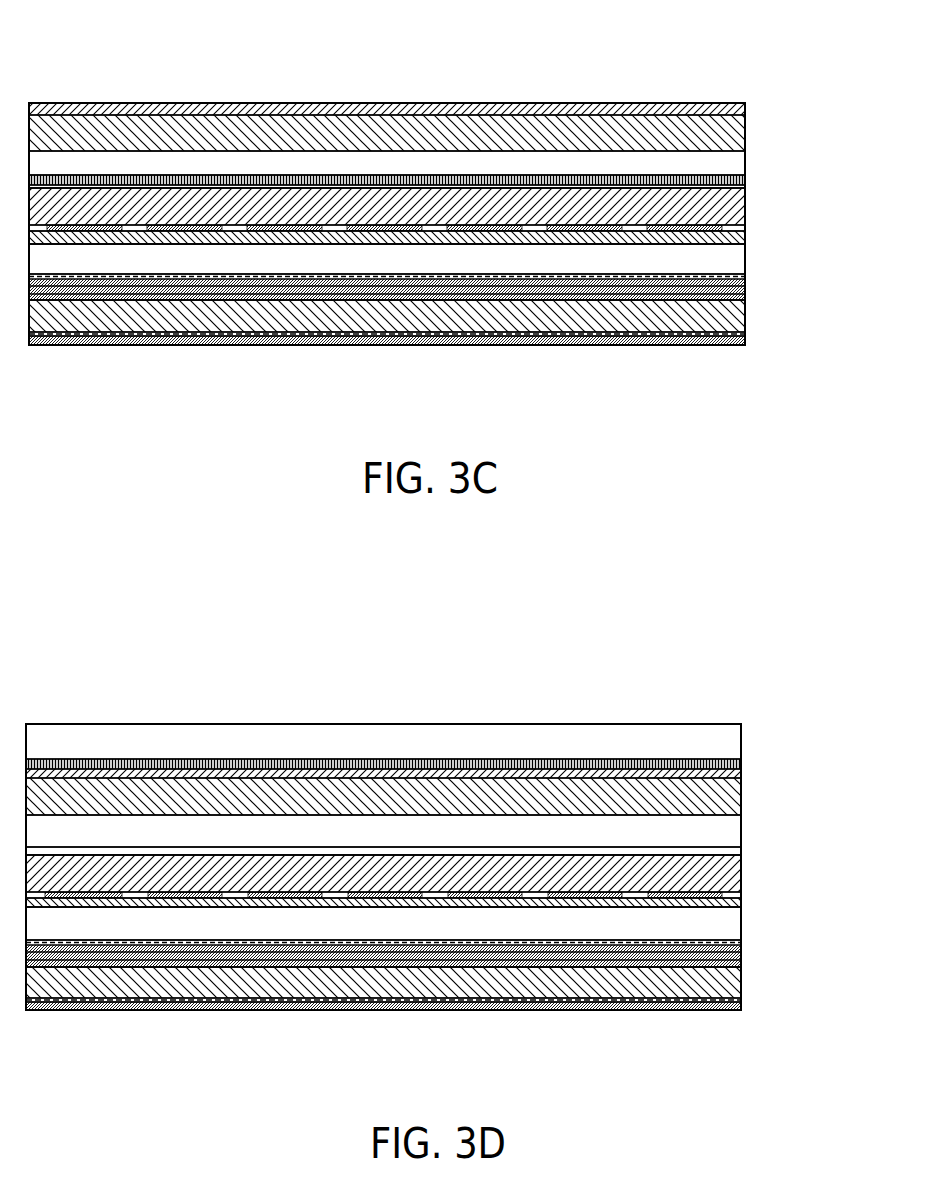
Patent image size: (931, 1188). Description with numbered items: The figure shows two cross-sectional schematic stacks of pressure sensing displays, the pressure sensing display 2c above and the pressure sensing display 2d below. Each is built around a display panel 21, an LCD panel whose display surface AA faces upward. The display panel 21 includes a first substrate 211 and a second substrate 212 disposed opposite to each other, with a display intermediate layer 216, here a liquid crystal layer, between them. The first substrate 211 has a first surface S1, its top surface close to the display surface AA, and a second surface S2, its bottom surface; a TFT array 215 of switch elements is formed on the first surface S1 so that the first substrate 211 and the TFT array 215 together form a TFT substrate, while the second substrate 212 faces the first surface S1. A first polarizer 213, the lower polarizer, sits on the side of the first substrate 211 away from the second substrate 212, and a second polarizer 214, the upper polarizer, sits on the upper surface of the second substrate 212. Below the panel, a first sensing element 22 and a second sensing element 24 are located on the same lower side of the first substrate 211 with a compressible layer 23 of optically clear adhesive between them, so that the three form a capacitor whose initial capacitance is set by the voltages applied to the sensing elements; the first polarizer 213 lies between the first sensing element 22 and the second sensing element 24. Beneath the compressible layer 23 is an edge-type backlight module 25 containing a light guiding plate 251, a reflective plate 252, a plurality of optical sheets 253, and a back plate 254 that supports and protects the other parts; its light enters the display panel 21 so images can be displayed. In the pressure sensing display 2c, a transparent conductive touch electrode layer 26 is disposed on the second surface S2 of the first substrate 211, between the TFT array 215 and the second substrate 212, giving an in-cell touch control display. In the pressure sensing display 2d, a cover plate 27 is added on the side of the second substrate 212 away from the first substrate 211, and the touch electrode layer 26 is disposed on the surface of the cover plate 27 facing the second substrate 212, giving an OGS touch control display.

In FIG. 3C, the pressure sensing display 2c is at (132, 52).
In FIG. 3D, the pressure sensing display 2d is at (132, 680).
In FIG. 3C, the display surface AA is at (570, 103).
In FIG. 3D, the display surface AA is at (597, 724).
In FIG. 3C, the first surface S1 is at (456, 190).
In FIG. 3D, the first surface S1 is at (482, 855).
In FIG. 3C, the second surface S2 is at (532, 232).
In FIG. 3D, the second surface S2 is at (528, 899).
In FIG. 3C, the display panel 21 is at (817, 88).
In FIG. 3D, the display panel 21 is at (815, 750).
In FIG. 3C, the first substrate 211 is at (734, 213).
In FIG. 3D, the first substrate 211 is at (733, 878).
In FIG. 3C, the second substrate 212 is at (736, 142).
In FIG. 3D, the second substrate 212 is at (733, 800).
In FIG. 3C, the first polarizer 213 is at (736, 238).
In FIG. 3D, the first polarizer 213 is at (733, 900).
In FIG. 3C, the second polarizer 214 is at (736, 112).
In FIG. 3D, the second polarizer 214 is at (733, 773).
In FIG. 3C, the TFT array 215 is at (736, 188).
In FIG. 3D, the TFT array 215 is at (733, 852).
In FIG. 3C, the display intermediate layer 216 is at (722, 166).
In FIG. 3D, the display intermediate layer 216 is at (720, 837).
In FIG. 3C, the first sensing element 22 is at (480, 230).
In FIG. 3D, the first sensing element 22 is at (476, 896).
In FIG. 3C, the compressible layer 23 is at (722, 260).
In FIG. 3D, the compressible layer 23 is at (720, 923).
In FIG. 3C, the second sensing element 24 is at (600, 300).
In FIG. 3D, the second sensing element 24 is at (597, 967).
In FIG. 3C, the backlight module 25 is at (817, 275).
In FIG. 3D, the backlight module 25 is at (813, 942).
In FIG. 3C, the light guiding plate 251 is at (740, 318).
In FIG. 3D, the light guiding plate 251 is at (740, 984).
In FIG. 3C, the reflective plate 252 is at (743, 335).
In FIG. 3D, the reflective plate 252 is at (743, 1000).
In FIG. 3C, the optical sheets 253 is at (746, 278).
In FIG. 3D, the optical sheets 253 is at (742, 944).
In FIG. 3C, the back plate 254 is at (727, 347).
In FIG. 3D, the back plate 254 is at (727, 1011).
In FIG. 3C, the touch electrode layer 26 is at (668, 182).
In FIG. 3D, the touch electrode layer 26 is at (708, 762).
In FIG. 3D, the cover plate 27 is at (733, 735).